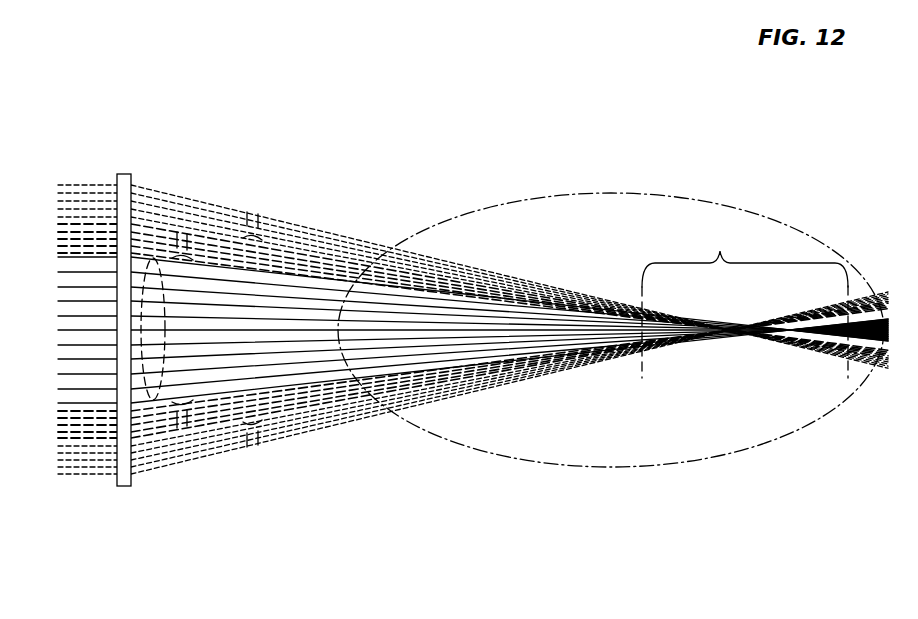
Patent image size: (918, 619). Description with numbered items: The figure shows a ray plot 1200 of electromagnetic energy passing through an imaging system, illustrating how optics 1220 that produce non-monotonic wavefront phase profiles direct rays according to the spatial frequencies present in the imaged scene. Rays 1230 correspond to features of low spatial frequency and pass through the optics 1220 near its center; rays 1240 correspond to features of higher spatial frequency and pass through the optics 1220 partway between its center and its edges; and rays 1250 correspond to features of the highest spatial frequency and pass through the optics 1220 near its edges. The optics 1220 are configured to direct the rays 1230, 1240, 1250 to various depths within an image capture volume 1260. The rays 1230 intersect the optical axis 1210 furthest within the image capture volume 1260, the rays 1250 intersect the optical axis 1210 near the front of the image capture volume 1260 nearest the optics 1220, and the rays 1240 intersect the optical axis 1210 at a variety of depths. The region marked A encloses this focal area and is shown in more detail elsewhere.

The ray plot 1200 is at (203, 86).
The optical axis 1210 is at (87, 330).
The optics 1220 is at (121, 487).
The rays 1230 is at (152, 401).
The rays 1240 is at (185, 230).
The rays 1250 is at (250, 222).
The image capture volume 1260 is at (745, 299).
The region A is at (638, 192).